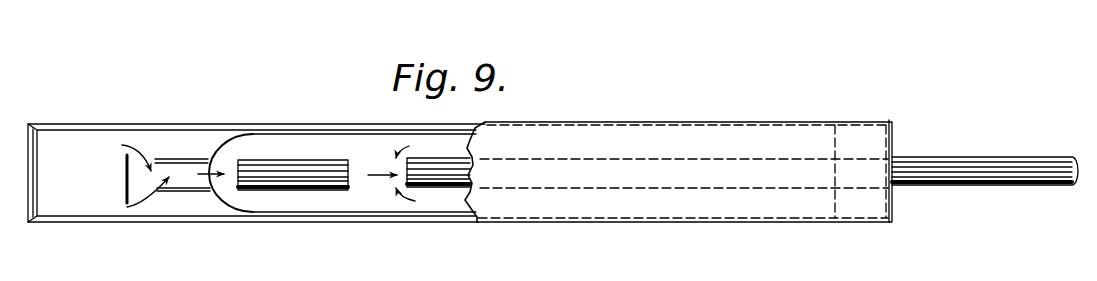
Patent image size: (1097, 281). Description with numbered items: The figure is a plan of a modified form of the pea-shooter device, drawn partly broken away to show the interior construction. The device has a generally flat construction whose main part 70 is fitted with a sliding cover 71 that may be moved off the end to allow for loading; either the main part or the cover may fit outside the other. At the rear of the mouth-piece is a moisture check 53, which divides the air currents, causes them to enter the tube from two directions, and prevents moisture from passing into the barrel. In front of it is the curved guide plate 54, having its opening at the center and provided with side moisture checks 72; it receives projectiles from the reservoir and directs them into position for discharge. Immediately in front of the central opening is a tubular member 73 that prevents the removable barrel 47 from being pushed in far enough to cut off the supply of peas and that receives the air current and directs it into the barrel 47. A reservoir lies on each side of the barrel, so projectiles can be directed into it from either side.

The main part 70 is at (70, 146).
The side moisture checks 72 is at (174, 157).
The curved guide-plate 54 is at (222, 148).
The moisture check 53 is at (127, 176).
The tubular member 73 is at (322, 192).
The barrel 47 is at (452, 190).
The sliding cover 71 is at (634, 225).